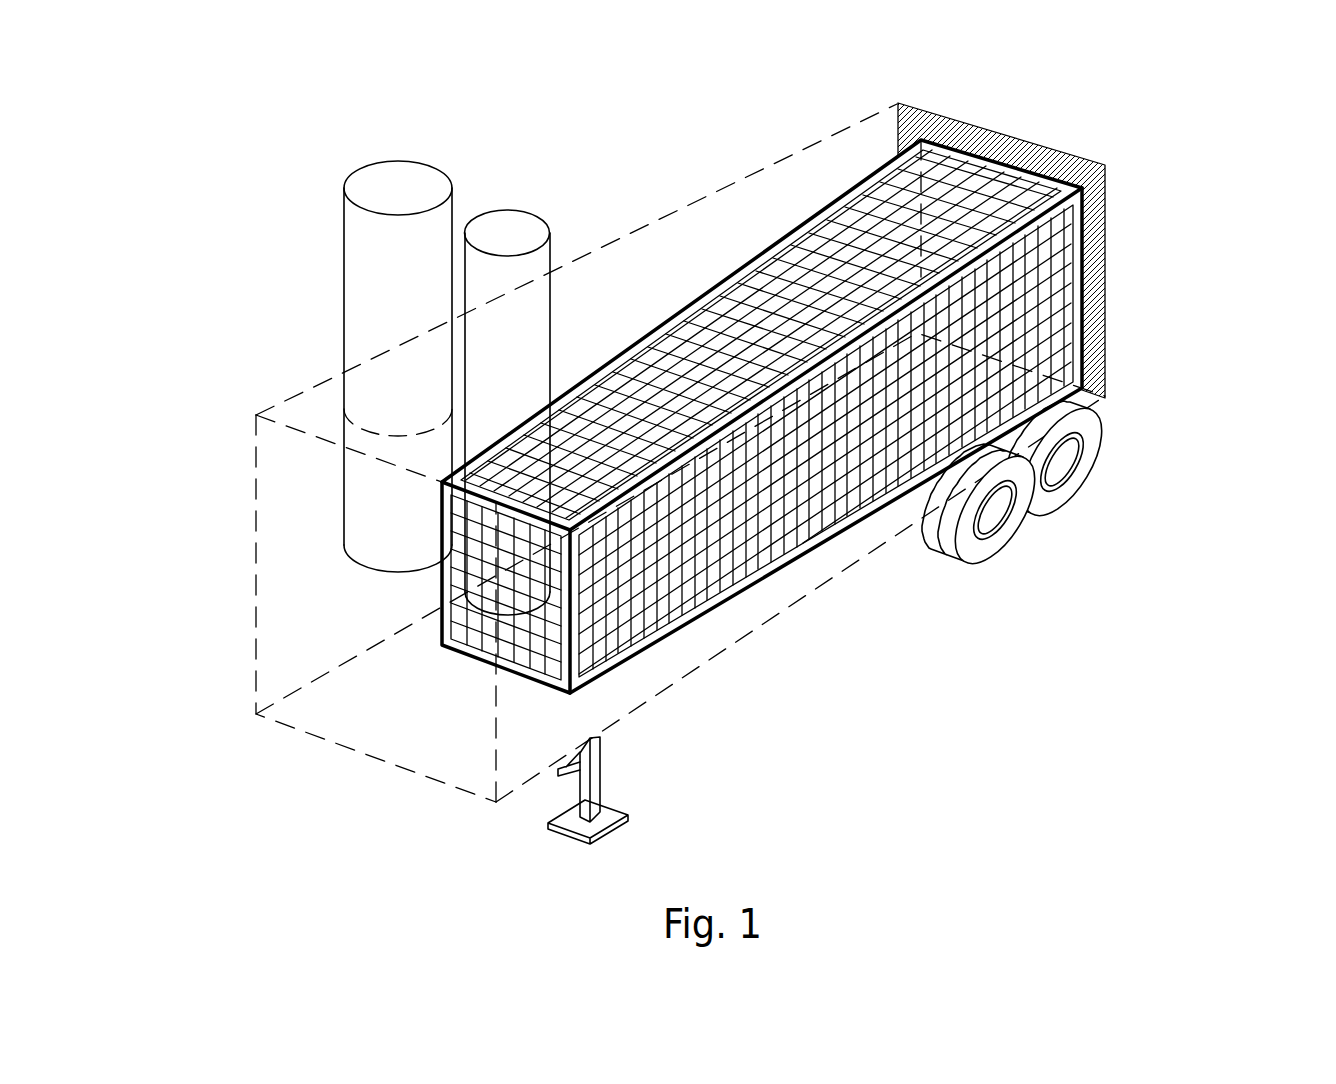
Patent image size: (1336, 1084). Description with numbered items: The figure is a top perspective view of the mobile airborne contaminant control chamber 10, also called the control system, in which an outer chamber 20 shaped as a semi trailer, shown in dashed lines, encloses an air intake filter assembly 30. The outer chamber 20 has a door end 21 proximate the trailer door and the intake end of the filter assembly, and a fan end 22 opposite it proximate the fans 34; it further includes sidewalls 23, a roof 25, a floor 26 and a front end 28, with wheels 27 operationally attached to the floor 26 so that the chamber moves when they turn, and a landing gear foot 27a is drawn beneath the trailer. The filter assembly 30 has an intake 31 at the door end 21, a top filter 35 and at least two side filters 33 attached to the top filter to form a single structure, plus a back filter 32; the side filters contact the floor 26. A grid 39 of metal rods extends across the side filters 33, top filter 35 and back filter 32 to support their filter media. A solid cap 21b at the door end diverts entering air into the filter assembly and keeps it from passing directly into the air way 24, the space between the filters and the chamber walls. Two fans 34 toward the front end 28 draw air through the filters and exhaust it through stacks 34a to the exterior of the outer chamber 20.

The mobile airborne contaminant control chamber 10 is at (707, 463).
The outer chamber 20 is at (782, 463).
The door end 21 is at (687, 443).
The cap 21b is at (1017, 146).
The fan end 22 is at (227, 449).
The sidewalls 23 is at (743, 610).
The air way 24 is at (305, 428).
The roof 25 is at (730, 224).
The floor 26 is at (652, 702).
The wheels 27 is at (997, 557).
The landing gear 27a is at (620, 820).
The front end 28 is at (301, 609).
The air intake filter assembly 30 is at (955, 150).
The intake 31 is at (1060, 178).
The back filter 32 is at (440, 648).
The side filters 33 is at (877, 473).
The fans 34 is at (364, 388).
The stacks 34a is at (505, 335).
The top filter 35 is at (823, 278).
The grid 39 is at (843, 452).